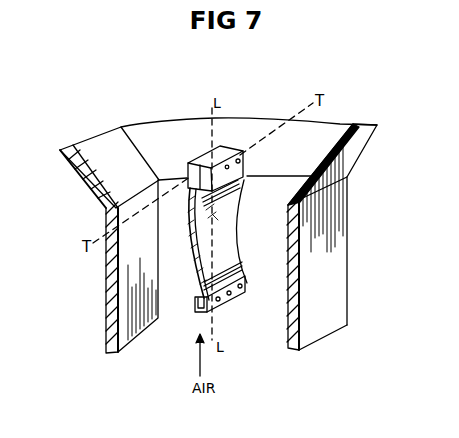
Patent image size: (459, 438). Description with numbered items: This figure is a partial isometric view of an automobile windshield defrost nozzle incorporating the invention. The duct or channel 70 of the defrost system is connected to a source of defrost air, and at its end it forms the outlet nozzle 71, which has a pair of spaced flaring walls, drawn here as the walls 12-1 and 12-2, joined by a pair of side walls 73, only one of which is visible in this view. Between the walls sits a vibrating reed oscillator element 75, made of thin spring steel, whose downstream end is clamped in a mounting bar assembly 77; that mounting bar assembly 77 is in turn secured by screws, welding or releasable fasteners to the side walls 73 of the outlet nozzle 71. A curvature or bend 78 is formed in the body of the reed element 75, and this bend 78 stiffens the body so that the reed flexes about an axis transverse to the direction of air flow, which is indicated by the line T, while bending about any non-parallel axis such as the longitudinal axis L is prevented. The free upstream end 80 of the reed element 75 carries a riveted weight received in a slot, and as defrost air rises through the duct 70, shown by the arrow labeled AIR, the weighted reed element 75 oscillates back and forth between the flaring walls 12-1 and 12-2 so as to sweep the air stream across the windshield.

The right wall panel 12-1 is at (353, 160).
The left wall panel 12-2 is at (90, 148).
The duct or channel 70 is at (103, 321).
The outlet nozzle 71 is at (100, 196).
The side walls 73 is at (318, 138).
The vibrating reed oscillator element 75 is at (235, 228).
The mounting bar assembly 77 is at (236, 142).
The curvature or bend 78 is at (202, 242).
The upstream end 80 is at (197, 309).